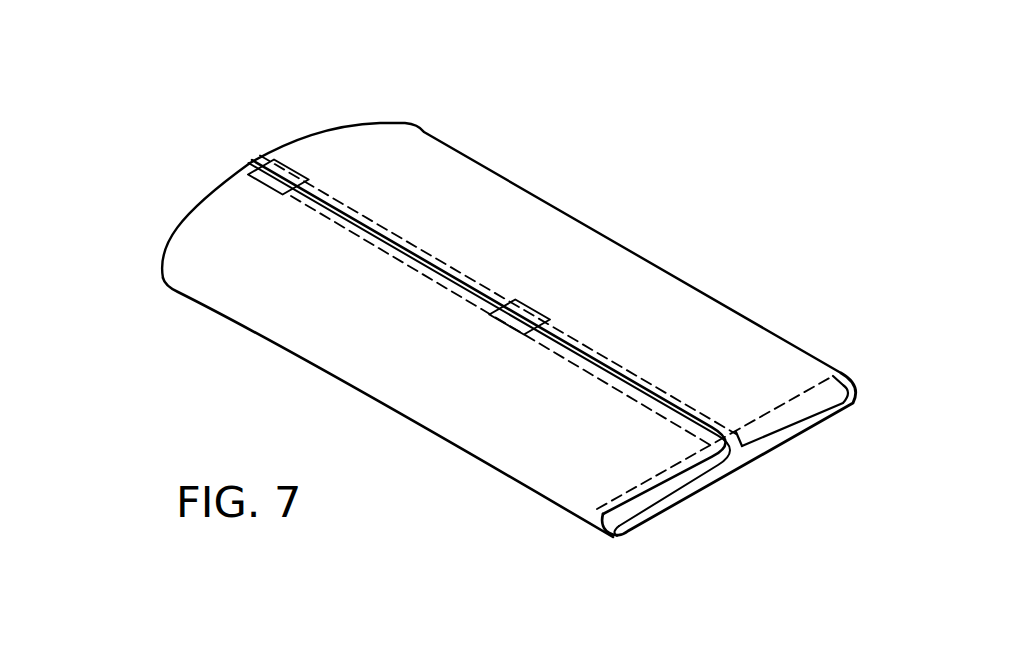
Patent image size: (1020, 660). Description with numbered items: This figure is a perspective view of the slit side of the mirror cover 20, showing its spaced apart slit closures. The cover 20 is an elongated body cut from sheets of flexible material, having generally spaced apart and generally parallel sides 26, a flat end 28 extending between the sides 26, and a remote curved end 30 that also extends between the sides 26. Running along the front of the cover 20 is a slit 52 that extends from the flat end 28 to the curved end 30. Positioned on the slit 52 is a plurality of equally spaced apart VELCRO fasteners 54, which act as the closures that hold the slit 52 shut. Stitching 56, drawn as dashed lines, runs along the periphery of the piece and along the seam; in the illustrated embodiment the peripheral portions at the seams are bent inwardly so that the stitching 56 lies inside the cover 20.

The mirror cover 20 is at (510, 93).
The sides 26 is at (560, 208).
The flat end 28 is at (725, 480).
The curved end 30 is at (228, 183).
The slit 52 is at (597, 353).
The VELCRO fasteners 54 is at (290, 175).
The stitching 56 is at (673, 380).